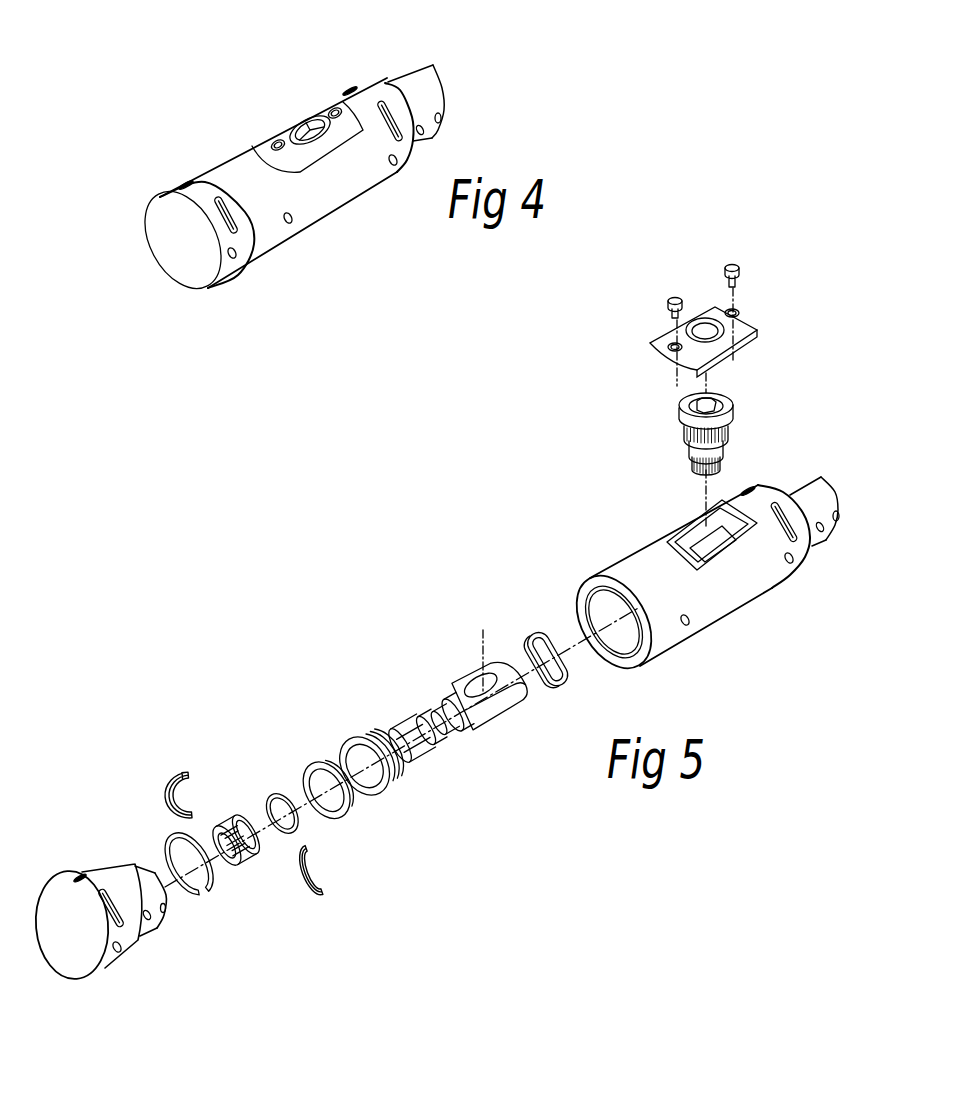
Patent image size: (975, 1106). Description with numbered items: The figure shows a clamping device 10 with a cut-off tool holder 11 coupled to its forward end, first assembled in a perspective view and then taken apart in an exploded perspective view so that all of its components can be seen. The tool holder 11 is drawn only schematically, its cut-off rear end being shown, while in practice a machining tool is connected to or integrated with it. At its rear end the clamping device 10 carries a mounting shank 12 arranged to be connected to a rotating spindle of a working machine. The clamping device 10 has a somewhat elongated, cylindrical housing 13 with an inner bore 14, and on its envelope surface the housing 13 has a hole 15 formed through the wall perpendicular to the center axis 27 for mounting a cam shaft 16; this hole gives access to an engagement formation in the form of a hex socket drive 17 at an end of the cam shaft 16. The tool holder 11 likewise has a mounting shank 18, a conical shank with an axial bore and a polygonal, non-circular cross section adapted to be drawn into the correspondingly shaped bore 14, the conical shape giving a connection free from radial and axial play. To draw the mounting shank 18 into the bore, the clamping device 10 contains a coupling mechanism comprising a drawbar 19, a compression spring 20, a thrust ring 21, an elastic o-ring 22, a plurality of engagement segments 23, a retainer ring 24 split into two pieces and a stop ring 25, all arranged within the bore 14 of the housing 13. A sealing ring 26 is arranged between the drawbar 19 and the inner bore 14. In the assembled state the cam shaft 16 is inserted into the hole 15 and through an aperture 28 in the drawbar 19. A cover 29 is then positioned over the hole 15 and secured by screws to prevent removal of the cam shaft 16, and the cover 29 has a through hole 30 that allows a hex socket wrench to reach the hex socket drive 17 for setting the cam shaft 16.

In FIG. 4, the clamping device 10 is at (276, 89).
In FIG. 4, the cut-off tool holder 11 is at (224, 263).
In FIG. 5, the cut-off tool holder 11 is at (130, 942).
In FIG. 4, the mounting shank 12 is at (412, 82).
In FIG. 4, the housing 13 is at (338, 185).
In FIG. 5, the housing 13 is at (737, 580).
In FIG. 5, the inner bore 14 is at (622, 627).
In FIG. 5, the hole 15 is at (695, 533).
In FIG. 5, the cam shaft 16 is at (722, 443).
In FIG. 5, the hex socket drive 17 is at (700, 413).
In FIG. 5, the mounting shank 18 is at (127, 873).
In FIG. 5, the drawbar 19 is at (453, 683).
In FIG. 5, the compression spring 20 is at (392, 776).
In FIG. 5, the thrust ring 21 is at (328, 758).
In FIG. 5, the elastic o-ring 22 is at (285, 790).
In FIG. 5, the engagement segments 23 is at (228, 858).
In FIG. 5, the retainer ring 24 is at (165, 787).
In FIG. 5, the stop ring 25 is at (165, 850).
In FIG. 5, the sealing ring 26 is at (564, 667).
In FIG. 5, the center axis 27 is at (578, 638).
In FIG. 5, the aperture 28 is at (490, 684).
In FIG. 4, the cover 29 is at (282, 135).
In FIG. 5, the cover 29 is at (737, 332).
In FIG. 4, the through hole 30 is at (310, 127).
In FIG. 5, the through hole 30 is at (705, 333).